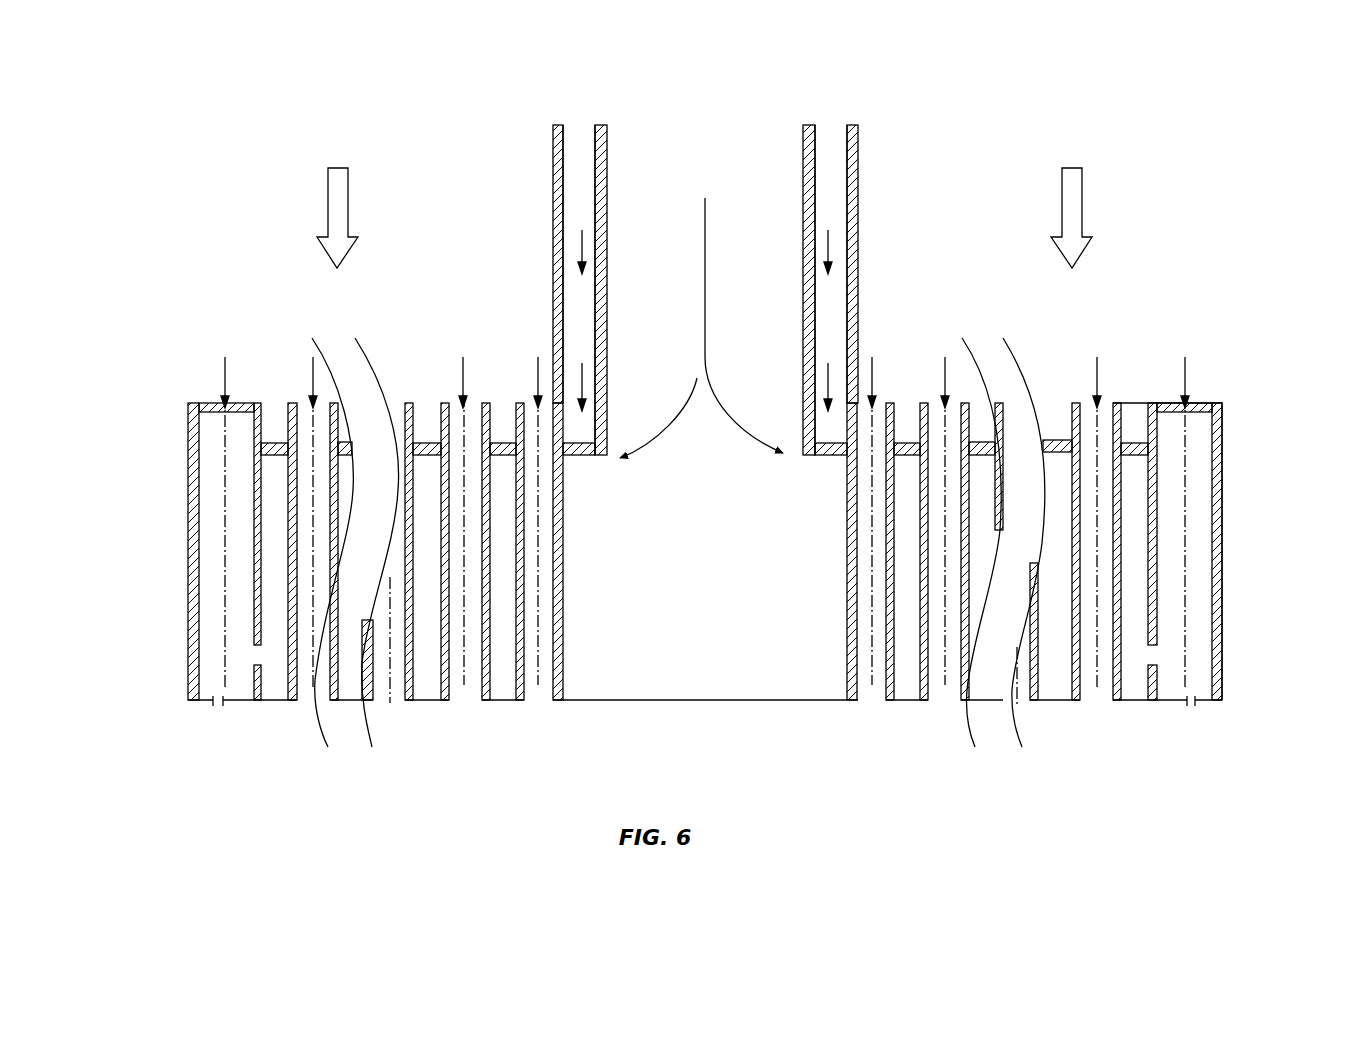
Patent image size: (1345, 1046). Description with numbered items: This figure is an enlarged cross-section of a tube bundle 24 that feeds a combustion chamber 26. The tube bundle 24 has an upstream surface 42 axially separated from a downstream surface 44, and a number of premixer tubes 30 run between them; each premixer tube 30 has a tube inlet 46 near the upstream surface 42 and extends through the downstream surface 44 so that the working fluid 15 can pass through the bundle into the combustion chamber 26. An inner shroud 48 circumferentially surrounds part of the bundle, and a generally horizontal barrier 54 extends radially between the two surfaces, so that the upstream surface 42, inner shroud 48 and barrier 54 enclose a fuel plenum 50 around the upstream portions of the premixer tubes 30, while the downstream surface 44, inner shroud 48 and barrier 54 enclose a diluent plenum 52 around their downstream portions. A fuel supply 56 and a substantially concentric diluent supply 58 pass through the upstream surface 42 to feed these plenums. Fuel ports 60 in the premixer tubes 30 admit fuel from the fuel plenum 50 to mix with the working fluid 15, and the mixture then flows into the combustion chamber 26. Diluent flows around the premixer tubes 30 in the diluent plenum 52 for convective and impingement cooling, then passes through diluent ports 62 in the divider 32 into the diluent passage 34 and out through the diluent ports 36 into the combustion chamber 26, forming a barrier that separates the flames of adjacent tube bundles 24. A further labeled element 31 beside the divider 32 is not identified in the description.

The working fluid 15 is at (348, 190).
The tube bundle 24 is at (1137, 322).
The combustion chamber 26 is at (745, 760).
The premixer tube 30 is at (305, 408).
The outer wall 31 is at (187, 633).
The divider 32 is at (1225, 477).
The diluent passage 34 is at (212, 545).
The diluent ports 36 is at (217, 708).
The upstream surface 42 is at (502, 408).
The downstream surface 44 is at (427, 700).
The tube inlet 46 is at (520, 408).
The inner shroud 48 is at (253, 610).
The fuel plenum 50 is at (273, 408).
The diluent plenum 52 is at (277, 652).
The barrier 54 is at (1128, 457).
The fuel supply 56 is at (552, 145).
The diluent supply 58 is at (592, 140).
The fuel port 60 is at (457, 407).
The diluent ports 62 is at (1150, 667).